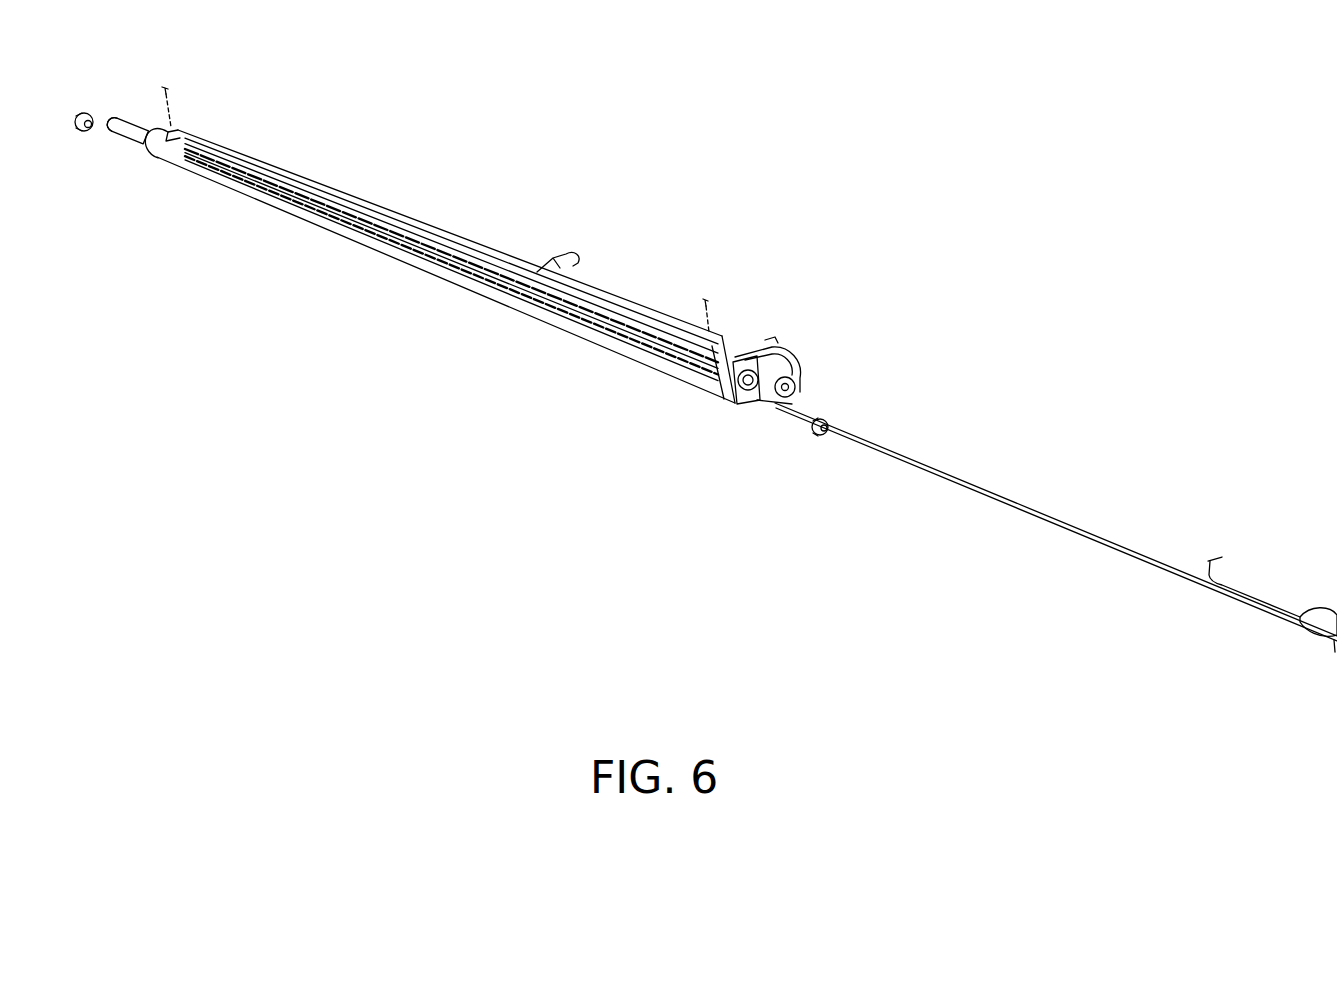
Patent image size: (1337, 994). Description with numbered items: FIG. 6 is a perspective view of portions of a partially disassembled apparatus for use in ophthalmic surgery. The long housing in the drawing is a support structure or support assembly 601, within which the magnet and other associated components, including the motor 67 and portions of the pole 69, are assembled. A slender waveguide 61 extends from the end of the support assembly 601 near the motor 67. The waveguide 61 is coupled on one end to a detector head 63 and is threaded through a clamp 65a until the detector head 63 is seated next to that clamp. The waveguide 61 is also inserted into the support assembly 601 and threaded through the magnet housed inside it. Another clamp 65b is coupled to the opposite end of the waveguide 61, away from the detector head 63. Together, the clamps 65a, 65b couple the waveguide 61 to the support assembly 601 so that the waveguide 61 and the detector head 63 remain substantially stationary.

The support assembly 601 is at (320, 214).
The pole 69 is at (125, 115).
The clamp 65b is at (77, 135).
The motor 67 is at (757, 346).
The waveguide 61 is at (955, 478).
The clamp 65a is at (821, 440).
The detector head 63 is at (1334, 650).